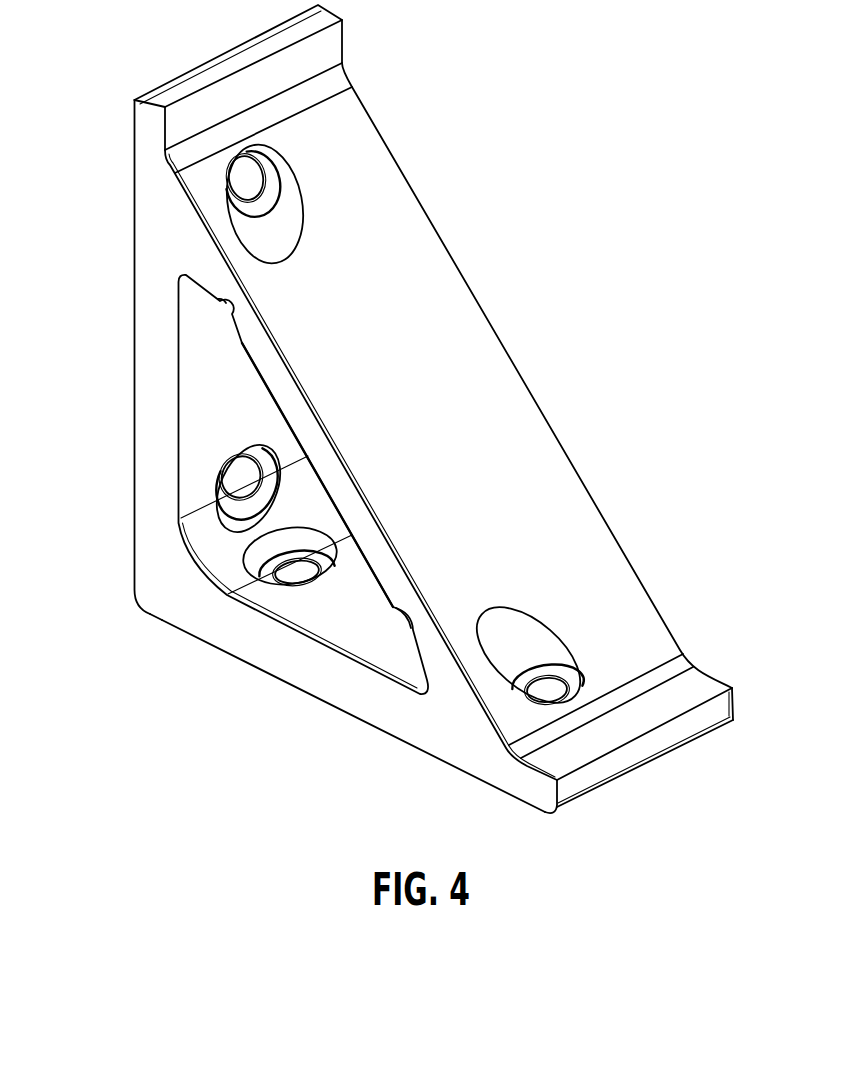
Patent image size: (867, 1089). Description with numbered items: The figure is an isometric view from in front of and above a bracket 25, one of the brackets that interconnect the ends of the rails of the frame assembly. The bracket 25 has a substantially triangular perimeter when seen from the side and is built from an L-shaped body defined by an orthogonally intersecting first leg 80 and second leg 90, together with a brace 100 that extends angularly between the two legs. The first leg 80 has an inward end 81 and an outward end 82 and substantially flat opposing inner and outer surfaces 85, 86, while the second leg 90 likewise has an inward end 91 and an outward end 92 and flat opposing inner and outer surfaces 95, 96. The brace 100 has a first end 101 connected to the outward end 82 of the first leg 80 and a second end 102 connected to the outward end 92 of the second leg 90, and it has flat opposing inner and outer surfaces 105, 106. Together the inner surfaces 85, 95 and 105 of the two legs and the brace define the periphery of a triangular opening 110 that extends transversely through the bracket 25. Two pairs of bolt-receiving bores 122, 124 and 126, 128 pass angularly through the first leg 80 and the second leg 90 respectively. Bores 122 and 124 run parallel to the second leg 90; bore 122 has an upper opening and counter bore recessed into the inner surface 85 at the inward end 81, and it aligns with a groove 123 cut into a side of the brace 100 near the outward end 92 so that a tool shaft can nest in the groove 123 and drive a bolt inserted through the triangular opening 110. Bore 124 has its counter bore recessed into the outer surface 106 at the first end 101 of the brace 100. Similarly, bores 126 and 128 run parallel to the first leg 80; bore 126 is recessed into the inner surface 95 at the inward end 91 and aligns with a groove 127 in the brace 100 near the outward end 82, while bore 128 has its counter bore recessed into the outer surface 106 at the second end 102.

The bracket 25 is at (612, 282).
The first leg 80 is at (304, 670).
The inward end 81 is at (202, 620).
The outward end 82 is at (697, 693).
The inner surface 85 is at (351, 611).
The outer surface 86 is at (380, 736).
The second leg 90 is at (155, 393).
The inward end 91 is at (158, 528).
The outward end 92 is at (150, 144).
The inner surface 95 is at (224, 384).
The outer surface 96 is at (128, 291).
The brace 100 is at (414, 185).
The first end 101 is at (647, 638).
The second end 102 is at (347, 118).
The inner surface 105 is at (268, 392).
The outer surface 106 is at (408, 410).
The triangular opening 110 is at (198, 459).
The bolt-receiving bore 122 is at (303, 567).
The groove 123 is at (232, 317).
The bolt-receiving bore 124 is at (542, 683).
The bolt-receiving bore 126 is at (238, 508).
The groove 127 is at (410, 623).
The bolt-receiving bore 128 is at (243, 184).